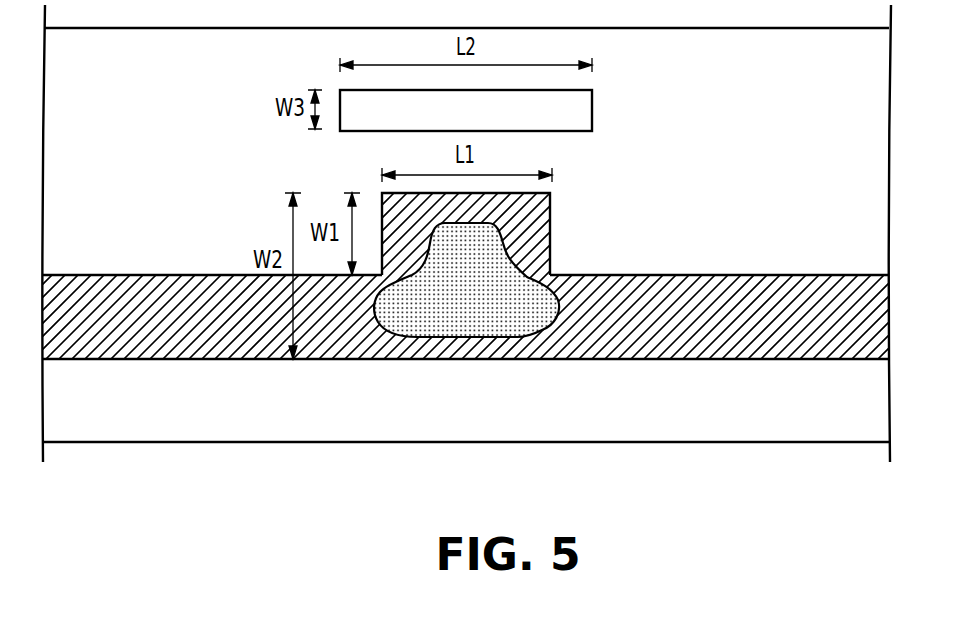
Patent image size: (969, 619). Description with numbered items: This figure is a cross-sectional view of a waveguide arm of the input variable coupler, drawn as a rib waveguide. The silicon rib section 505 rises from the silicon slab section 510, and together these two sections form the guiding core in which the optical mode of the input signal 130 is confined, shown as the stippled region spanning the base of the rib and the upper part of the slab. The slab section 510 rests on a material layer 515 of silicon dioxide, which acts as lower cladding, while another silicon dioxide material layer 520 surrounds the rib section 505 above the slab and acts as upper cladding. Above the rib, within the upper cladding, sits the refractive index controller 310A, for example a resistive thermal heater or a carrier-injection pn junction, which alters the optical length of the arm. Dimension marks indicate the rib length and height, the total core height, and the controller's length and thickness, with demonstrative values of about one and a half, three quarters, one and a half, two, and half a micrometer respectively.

The input signal 130 is at (442, 311).
The refractive index controller 310A is at (442, 121).
The rib section 505 is at (551, 218).
The slab section 510 is at (147, 331).
The material layer 515 is at (442, 420).
The material layer 520 is at (162, 157).